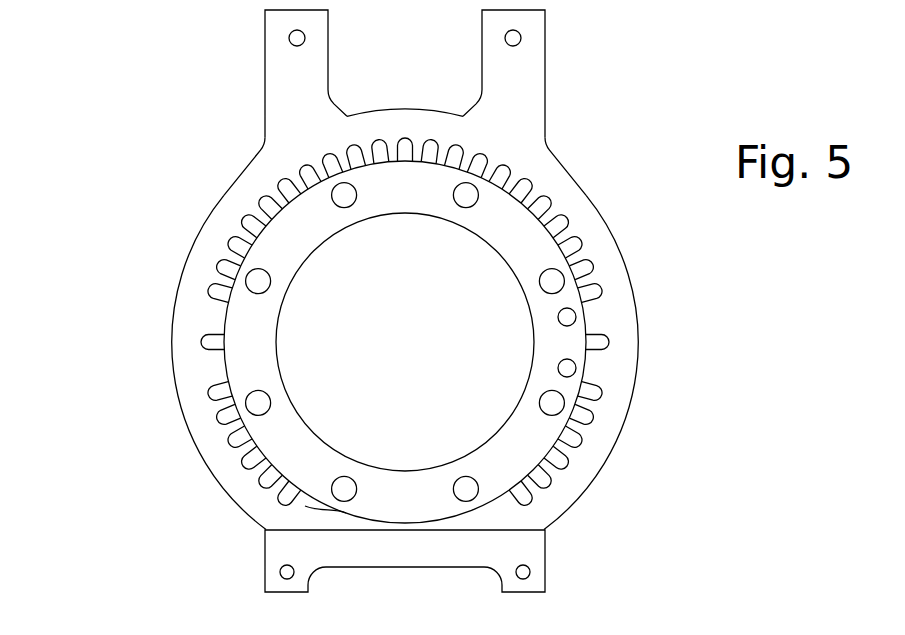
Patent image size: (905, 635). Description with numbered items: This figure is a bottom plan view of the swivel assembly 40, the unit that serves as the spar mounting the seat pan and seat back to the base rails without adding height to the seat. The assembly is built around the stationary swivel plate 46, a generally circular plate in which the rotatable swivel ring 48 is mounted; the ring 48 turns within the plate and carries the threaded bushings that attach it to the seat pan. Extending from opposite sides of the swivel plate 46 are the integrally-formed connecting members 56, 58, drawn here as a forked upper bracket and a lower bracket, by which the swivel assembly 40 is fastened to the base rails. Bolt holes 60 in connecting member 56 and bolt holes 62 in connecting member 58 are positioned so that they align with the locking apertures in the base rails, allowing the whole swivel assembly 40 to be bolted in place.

The swivel assembly 40 is at (155, 195).
The stationary swivel plate 46 is at (622, 378).
The rotatable swivel ring 48 is at (533, 246).
The connecting member 56 is at (482, 27).
The connecting member 58 is at (500, 572).
The bolt holes 60 is at (289, 46).
The bolt holes 62 is at (279, 574).